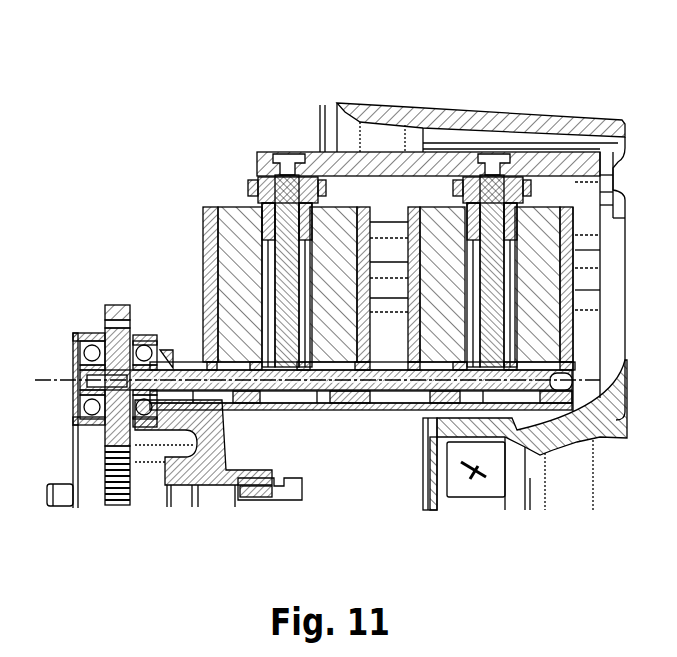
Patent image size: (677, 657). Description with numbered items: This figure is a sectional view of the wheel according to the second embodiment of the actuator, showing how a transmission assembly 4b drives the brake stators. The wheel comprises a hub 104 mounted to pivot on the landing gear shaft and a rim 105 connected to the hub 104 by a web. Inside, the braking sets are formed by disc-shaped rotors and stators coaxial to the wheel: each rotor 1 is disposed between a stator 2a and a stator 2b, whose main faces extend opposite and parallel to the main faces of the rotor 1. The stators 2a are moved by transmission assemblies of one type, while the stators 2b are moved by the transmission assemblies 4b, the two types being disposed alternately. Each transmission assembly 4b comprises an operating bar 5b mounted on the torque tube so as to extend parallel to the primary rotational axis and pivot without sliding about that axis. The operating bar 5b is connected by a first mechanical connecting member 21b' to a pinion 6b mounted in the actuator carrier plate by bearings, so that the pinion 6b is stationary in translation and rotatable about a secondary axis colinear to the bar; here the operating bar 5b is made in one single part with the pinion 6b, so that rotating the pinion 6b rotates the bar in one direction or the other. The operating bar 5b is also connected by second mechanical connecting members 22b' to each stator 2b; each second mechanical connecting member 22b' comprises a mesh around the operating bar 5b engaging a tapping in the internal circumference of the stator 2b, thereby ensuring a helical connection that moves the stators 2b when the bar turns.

The rotor 1 is at (314, 180).
The stator 2a is at (227, 207).
The stator 2b is at (338, 362).
The transmission assembly 4b is at (586, 366).
The operating bar 5b is at (237, 410).
The pinion 6b is at (118, 442).
The first mechanical connecting member 21b' is at (90, 420).
The second mechanical connecting member 22b' is at (361, 476).
The hub 104 is at (608, 428).
The rim 105 is at (506, 114).